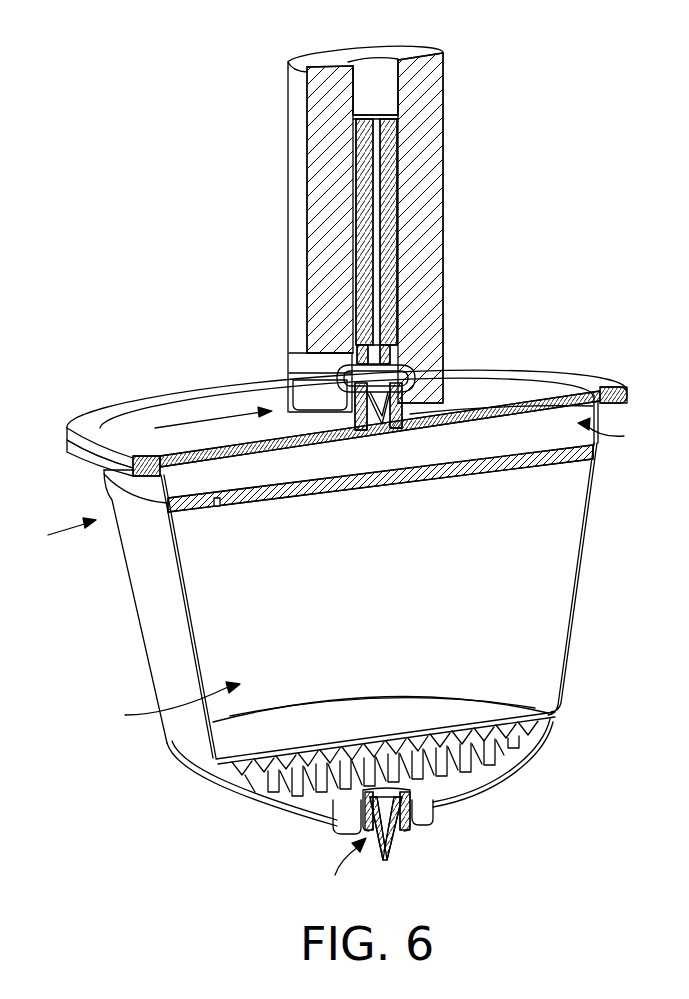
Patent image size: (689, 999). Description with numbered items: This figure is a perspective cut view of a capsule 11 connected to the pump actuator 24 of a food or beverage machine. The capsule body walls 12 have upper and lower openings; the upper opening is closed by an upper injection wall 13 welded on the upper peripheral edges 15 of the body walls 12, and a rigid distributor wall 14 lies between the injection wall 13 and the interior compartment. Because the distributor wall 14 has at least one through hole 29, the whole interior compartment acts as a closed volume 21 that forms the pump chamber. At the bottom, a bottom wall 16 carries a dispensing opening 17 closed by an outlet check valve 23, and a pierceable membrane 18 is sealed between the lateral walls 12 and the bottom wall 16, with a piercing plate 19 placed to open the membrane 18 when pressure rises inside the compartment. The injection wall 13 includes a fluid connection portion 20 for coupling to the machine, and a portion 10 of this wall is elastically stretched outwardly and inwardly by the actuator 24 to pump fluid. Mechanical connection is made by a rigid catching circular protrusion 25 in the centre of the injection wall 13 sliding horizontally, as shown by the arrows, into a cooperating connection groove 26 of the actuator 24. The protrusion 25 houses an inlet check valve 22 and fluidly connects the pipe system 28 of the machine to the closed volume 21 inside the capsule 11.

The portion of the capsule upper injection wall 10 is at (201, 399).
The capsule 11 is at (54, 536).
The capsule body walls 12 is at (584, 582).
The upper injection wall 13 is at (117, 396).
The rigid distributor wall 14 is at (595, 452).
The upper peripheral edges 15 is at (90, 466).
The bottom wall 16 is at (250, 792).
The dispensing opening 17 is at (362, 846).
The pierceable membrane 18 is at (540, 720).
The piercing plate 19 is at (455, 775).
The fluid connection portion 20 is at (346, 436).
The closed volume 21 is at (374, 575).
The inlet check valve 22 is at (482, 386).
The outlet check valve 23 is at (402, 848).
The pump actuator 24 is at (313, 143).
The rigid catching circular protrusion 25 is at (356, 372).
The connection groove 26 is at (352, 384).
The pipe system 28 is at (372, 62).
The through hole 29 is at (217, 506).